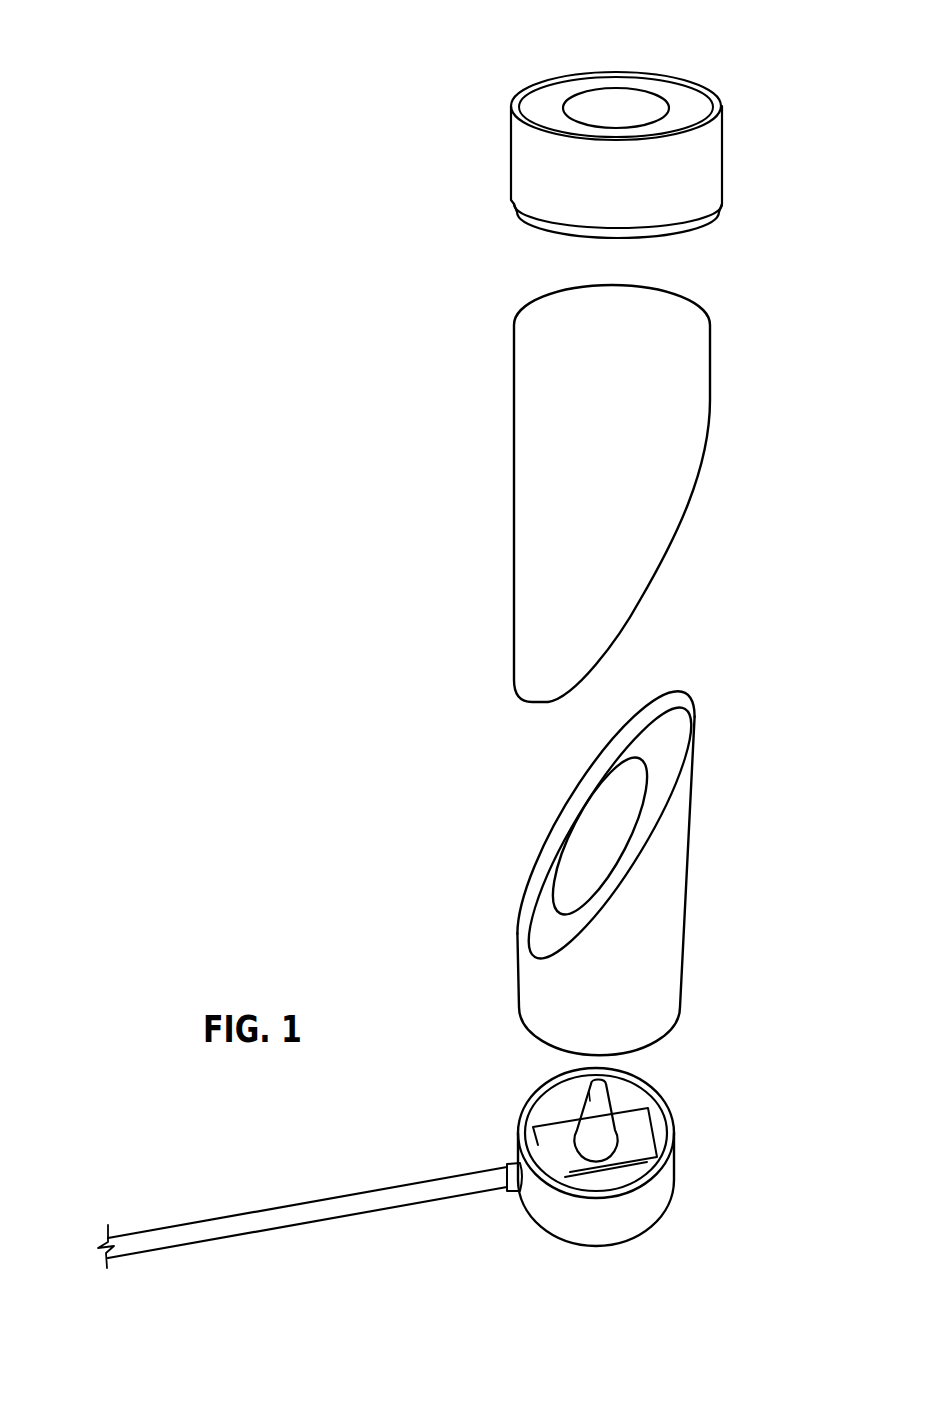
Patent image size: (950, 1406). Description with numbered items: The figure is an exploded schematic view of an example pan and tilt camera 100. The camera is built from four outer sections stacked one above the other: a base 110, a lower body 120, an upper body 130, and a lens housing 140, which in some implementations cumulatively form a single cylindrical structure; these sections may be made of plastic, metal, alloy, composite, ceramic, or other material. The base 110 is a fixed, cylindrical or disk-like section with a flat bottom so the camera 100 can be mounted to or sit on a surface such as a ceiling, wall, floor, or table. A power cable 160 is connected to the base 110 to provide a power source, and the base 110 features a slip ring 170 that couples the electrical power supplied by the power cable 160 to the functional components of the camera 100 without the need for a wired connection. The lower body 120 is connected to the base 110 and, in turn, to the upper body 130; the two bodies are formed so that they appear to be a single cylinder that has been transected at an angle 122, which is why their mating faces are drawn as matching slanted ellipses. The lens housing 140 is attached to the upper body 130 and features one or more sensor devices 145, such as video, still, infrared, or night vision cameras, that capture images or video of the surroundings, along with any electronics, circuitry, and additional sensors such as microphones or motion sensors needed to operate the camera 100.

The pan and tilt camera 100 is at (162, 56).
The base 110 is at (650, 1197).
The lower body 120 is at (655, 925).
The angle 122 is at (598, 850).
The upper body 130 is at (677, 398).
The lens housing 140 is at (708, 172).
The sensor devices 145 is at (588, 102).
The power cable 160 is at (377, 1210).
The slip ring 170 is at (592, 1100).